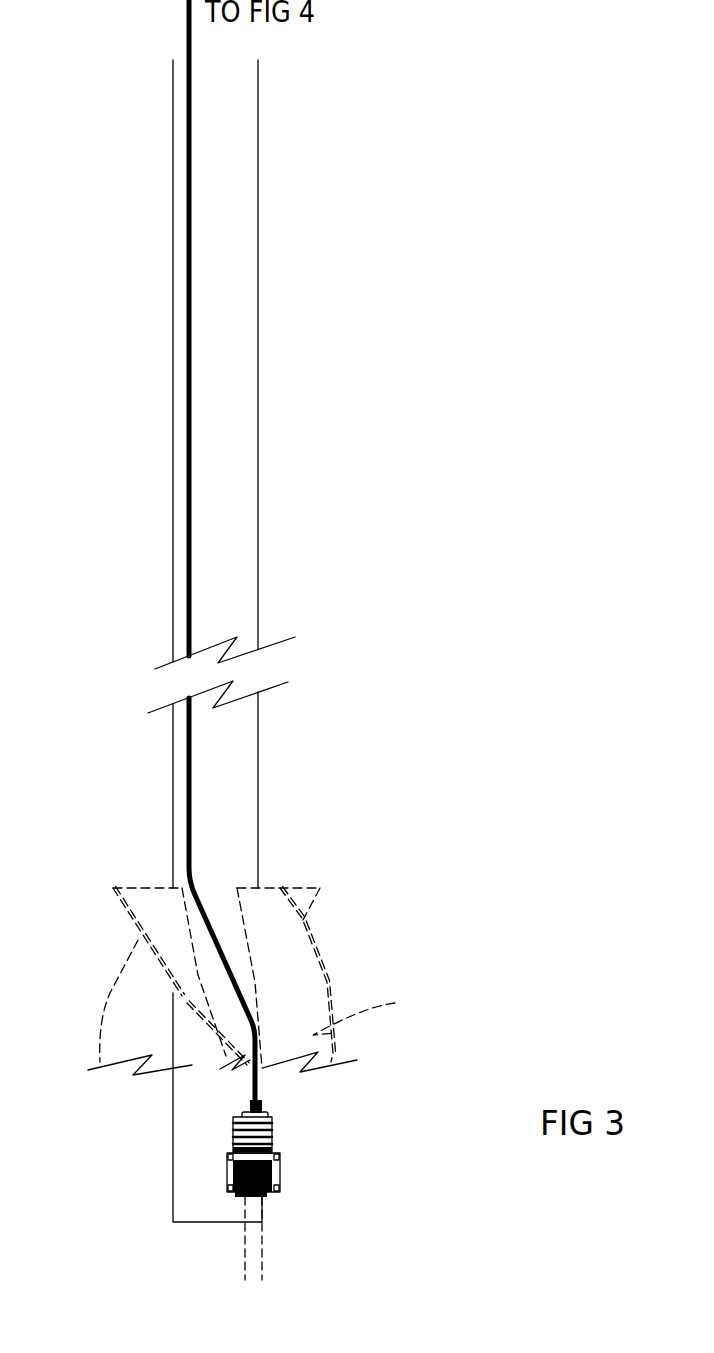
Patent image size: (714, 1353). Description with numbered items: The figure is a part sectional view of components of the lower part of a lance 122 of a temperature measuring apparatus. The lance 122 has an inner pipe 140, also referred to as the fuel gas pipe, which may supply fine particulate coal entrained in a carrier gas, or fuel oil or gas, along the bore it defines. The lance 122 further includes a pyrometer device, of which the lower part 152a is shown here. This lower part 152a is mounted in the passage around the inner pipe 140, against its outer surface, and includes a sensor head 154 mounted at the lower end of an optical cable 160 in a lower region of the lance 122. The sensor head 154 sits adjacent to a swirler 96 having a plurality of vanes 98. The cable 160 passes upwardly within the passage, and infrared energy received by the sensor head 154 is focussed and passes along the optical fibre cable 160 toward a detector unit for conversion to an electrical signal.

The lance 122 is at (366, 270).
The inner pipe 140 is at (272, 443).
The lower part of pyrometer device 152a is at (229, 612).
The optical cable 160 is at (202, 765).
The swirler 96 is at (333, 961).
The vanes 98 is at (125, 1013).
The sensor head 154 is at (283, 1175).